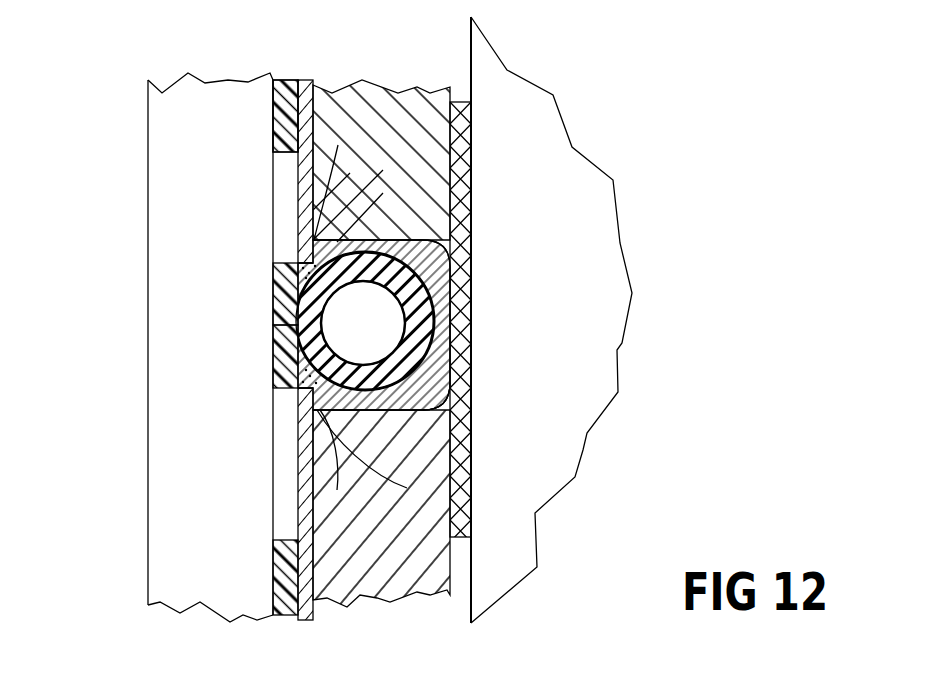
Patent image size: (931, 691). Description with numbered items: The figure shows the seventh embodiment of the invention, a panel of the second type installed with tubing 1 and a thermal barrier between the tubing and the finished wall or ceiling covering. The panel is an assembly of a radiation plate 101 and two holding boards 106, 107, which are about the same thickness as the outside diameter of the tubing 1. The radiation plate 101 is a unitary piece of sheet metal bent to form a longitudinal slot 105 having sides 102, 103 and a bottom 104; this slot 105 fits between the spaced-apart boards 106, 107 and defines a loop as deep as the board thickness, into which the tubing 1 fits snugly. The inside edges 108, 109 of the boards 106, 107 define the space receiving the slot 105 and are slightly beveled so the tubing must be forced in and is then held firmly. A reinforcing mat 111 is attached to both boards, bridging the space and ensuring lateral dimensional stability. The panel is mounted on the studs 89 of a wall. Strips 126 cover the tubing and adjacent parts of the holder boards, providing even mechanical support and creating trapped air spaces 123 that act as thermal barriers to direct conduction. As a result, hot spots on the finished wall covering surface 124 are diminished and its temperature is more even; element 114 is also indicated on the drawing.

The tubing 1 is at (290, 333).
The studs 89 is at (552, 142).
The radiation plate 101 is at (290, 141).
The slot side 102 is at (280, 285).
The slot side 103 is at (280, 351).
The slot bottom 104 is at (430, 389).
The longitudinal slot 105 is at (238, 303).
The holding board 106 is at (322, 88).
The holding board 107 is at (363, 595).
The inside edge 108 is at (470, 267).
The inside edge 109 is at (452, 391).
The reinforcing mat 111 is at (472, 312).
The panel structure 114 is at (148, 279).
The trapped air spaces 123 is at (285, 457).
The wall covering surface 124 is at (167, 170).
The strips 126 is at (293, 54).